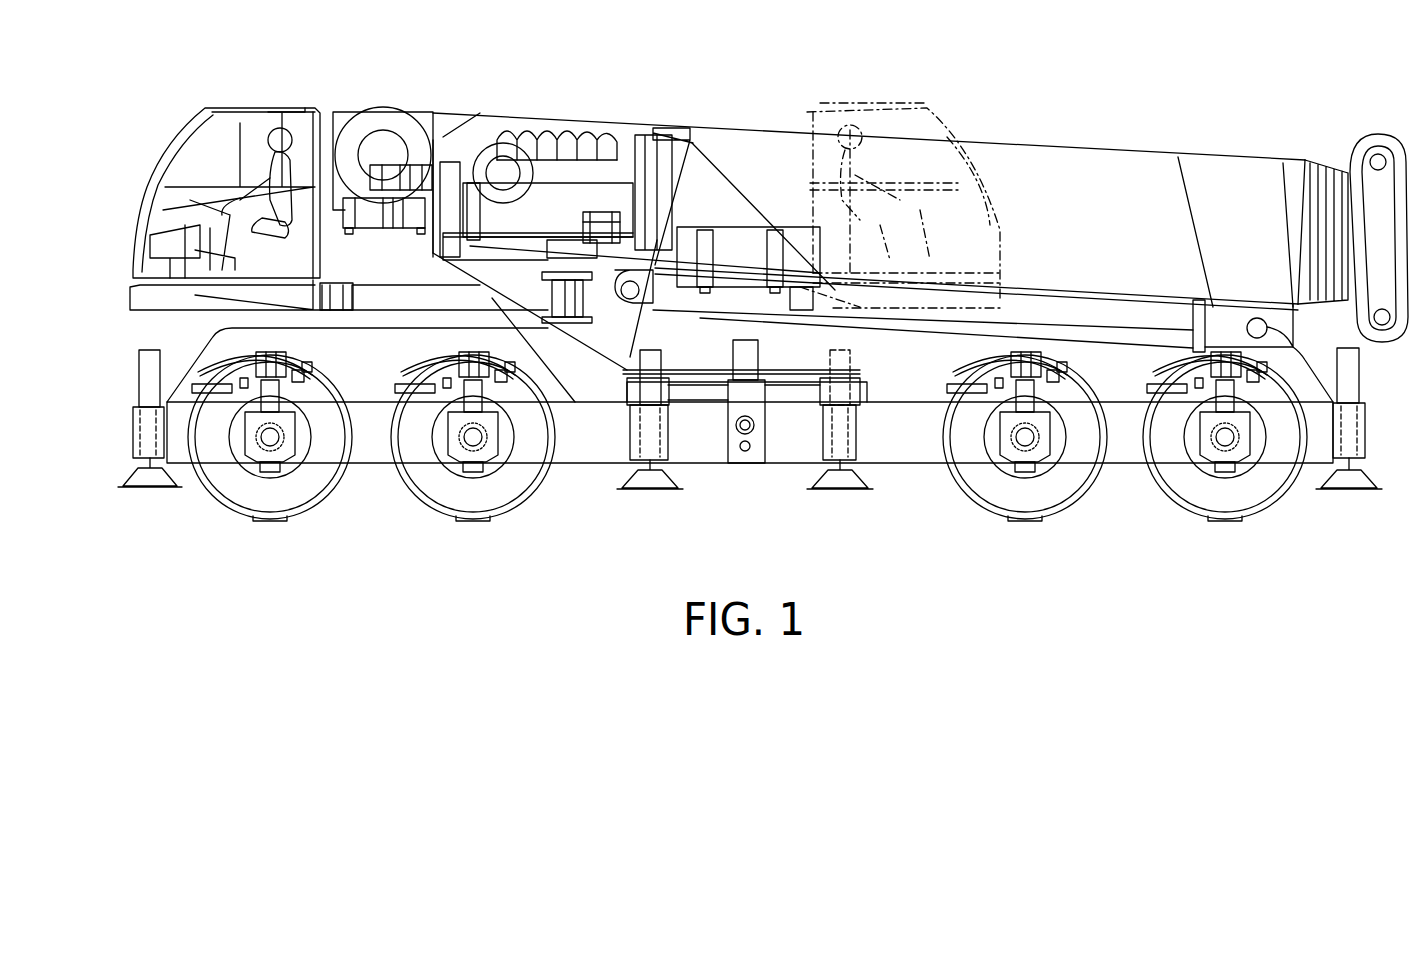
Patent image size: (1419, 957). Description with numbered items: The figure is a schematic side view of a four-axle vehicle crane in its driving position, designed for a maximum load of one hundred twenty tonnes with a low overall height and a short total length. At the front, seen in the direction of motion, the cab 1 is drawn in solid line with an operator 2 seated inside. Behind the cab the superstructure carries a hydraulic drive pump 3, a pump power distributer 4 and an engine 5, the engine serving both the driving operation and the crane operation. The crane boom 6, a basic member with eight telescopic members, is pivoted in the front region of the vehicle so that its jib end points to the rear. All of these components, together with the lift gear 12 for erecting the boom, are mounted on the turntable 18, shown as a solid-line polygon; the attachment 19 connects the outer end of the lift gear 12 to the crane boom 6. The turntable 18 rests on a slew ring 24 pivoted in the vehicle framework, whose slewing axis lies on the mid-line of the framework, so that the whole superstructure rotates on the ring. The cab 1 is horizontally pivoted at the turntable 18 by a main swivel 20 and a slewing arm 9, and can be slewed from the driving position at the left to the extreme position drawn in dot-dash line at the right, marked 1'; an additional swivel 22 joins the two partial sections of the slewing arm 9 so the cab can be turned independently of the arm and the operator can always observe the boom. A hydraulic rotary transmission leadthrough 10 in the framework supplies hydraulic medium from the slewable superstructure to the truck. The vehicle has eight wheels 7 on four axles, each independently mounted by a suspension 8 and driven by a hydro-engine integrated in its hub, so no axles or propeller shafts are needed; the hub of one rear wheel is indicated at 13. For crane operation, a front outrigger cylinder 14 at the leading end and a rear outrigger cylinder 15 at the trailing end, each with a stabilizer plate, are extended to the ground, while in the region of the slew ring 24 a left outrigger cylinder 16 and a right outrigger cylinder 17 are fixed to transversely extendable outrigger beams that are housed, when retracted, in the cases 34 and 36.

The cab 1 is at (226, 171).
The cab in slewed extreme position 1' is at (900, 187).
The operator 2 is at (272, 130).
The hydraulic drive pump 3 is at (410, 213).
The pump power distributer 4 is at (433, 113).
The engine 5 is at (547, 187).
The crane boom 6 is at (1247, 170).
The wheel 7 is at (232, 492).
The suspension 8 is at (283, 433).
The slewing arm 9 is at (403, 300).
The hydraulic rotary transmission leadthrough 10 is at (733, 447).
The lift gear 12 is at (910, 320).
The rear axle hub 13 is at (1018, 450).
The front outrigger cylinder 14 is at (143, 437).
The rear outrigger cylinder 15 is at (1352, 423).
The left outrigger cylinder 16 is at (655, 435).
The right outrigger cylinder 17 is at (842, 435).
The turntable 18 is at (695, 175).
The attachment 19 is at (1258, 322).
The main swivel 20 is at (573, 307).
The additional swivel 22 is at (333, 300).
The slew ring 24 is at (707, 387).
The case 34 is at (630, 437).
The case 36 is at (860, 437).